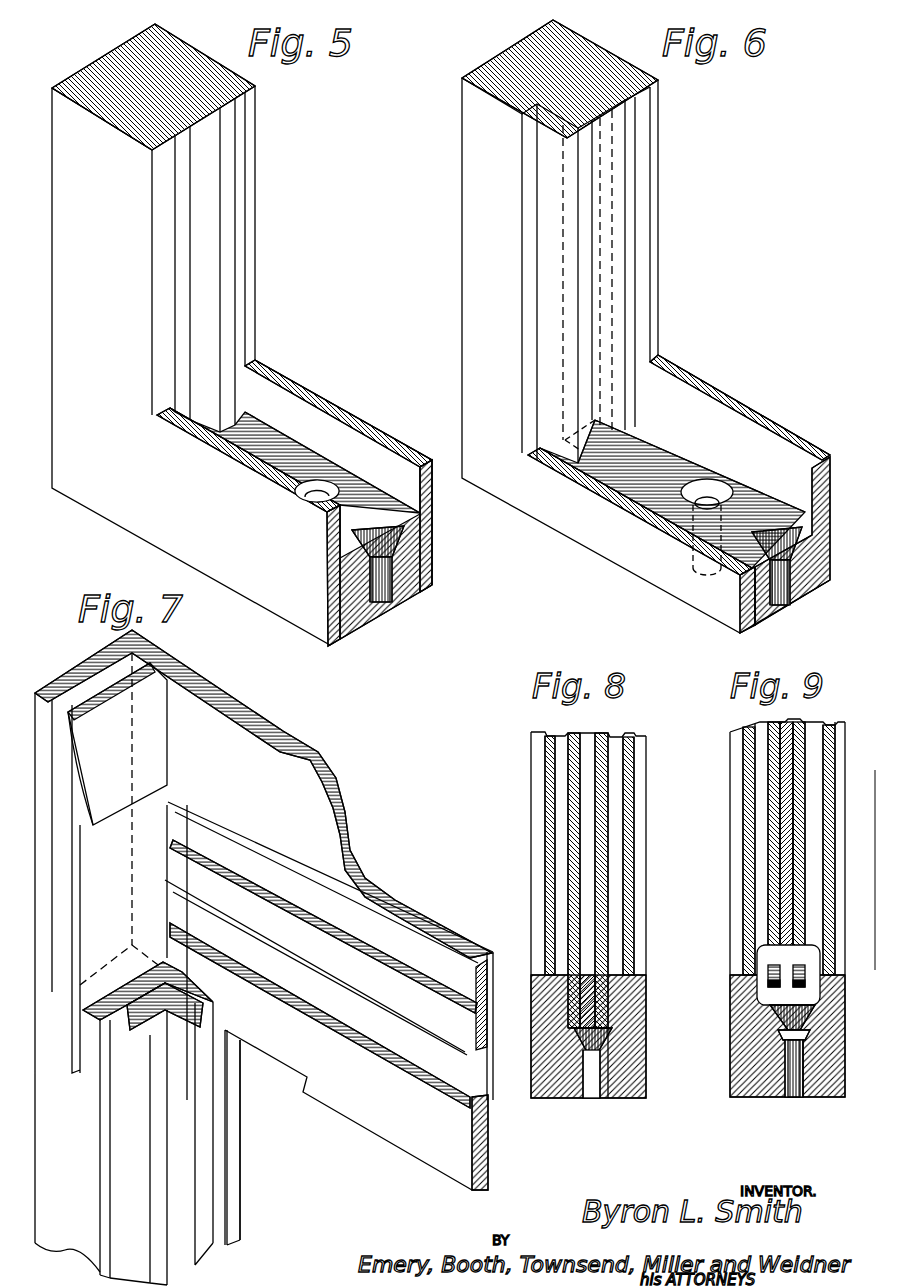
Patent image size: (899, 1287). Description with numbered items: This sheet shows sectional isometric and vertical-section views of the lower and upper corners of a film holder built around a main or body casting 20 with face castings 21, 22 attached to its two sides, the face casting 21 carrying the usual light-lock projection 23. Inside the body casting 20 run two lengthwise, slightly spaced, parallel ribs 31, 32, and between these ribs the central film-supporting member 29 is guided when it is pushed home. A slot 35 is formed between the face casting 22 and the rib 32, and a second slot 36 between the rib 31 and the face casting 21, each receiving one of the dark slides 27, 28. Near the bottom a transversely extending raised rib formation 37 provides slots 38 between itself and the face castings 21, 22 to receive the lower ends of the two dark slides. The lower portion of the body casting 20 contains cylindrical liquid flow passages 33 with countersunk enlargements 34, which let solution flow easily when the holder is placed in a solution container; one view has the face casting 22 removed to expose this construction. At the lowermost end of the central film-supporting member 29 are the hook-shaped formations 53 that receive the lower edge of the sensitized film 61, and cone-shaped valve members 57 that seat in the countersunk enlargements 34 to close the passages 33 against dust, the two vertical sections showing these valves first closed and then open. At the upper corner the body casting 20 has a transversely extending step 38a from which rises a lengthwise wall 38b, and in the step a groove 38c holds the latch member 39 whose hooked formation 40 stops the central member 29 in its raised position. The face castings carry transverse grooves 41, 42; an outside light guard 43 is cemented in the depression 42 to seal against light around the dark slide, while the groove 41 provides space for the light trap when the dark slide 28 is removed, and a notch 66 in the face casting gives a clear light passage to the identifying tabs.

In FIG. 5, the main or body casting 20 is at (106, 72).
In FIG. 6, the main or body casting 20 is at (508, 62).
In FIG. 8, the main or body casting 20 is at (620, 1092).
In FIG. 9, the main or body casting 20 is at (815, 1092).
In FIG. 5, the face casting 21 is at (255, 312).
In FIG. 6, the face casting 21 is at (660, 297).
In FIG. 8, the face casting 21 is at (647, 1080).
In FIG. 9, the face casting 21 is at (840, 810).
In FIG. 5, the face casting 22 is at (70, 156).
In FIG. 7, the face casting 22 is at (67, 982).
In FIG. 8, the face casting 22 is at (538, 1055).
In FIG. 9, the face casting 22 is at (743, 790).
In FIG. 7, the light-lock projection 23 is at (493, 1133).
In FIG. 8, the dark slide 27 is at (625, 832).
In FIG. 9, the dark slide 27 is at (820, 878).
In FIG. 8, the dark slide 28 is at (545, 815).
In FIG. 9, the dark slide 28 is at (745, 868).
In FIG. 9, the central film-supporting member 29 is at (785, 930).
In FIG. 5, the rib 31 is at (230, 252).
In FIG. 6, the rib 31 is at (628, 240).
In FIG. 7, the rib 31 is at (190, 1205).
In FIG. 5, the rib 32 is at (185, 330).
In FIG. 6, the rib 32 is at (585, 275).
In FIG. 7, the rib 32 is at (163, 1190).
In FIG. 5, the liquid flow passage 33 is at (380, 606).
In FIG. 6, the liquid flow passage 33 is at (782, 605).
In FIG. 8, the liquid flow passage 33 is at (590, 1100).
In FIG. 9, the liquid flow passage 33 is at (790, 1100).
In FIG. 5, the countersunk enlargement 34 is at (318, 488).
In FIG. 6, the countersunk enlargement 34 is at (713, 487).
In FIG. 9, the countersunk enlargement 34 is at (785, 1035).
In FIG. 5, the slot 35 is at (170, 285).
In FIG. 5, the slot 36 is at (240, 218).
In FIG. 6, the slot 36 is at (640, 185).
In FIG. 7, the slot 36 is at (225, 1165).
In FIG. 5, the raised rib formation 37 is at (272, 457).
In FIG. 6, the raised rib formation 37 is at (660, 460).
In FIG. 5, the slot 38 is at (340, 565).
In FIG. 6, the slot 38 is at (625, 492).
In FIG. 7, the step 38a is at (128, 1005).
In FIG. 7, the wall 38b is at (98, 686).
In FIG. 7, the groove or slot 38c is at (70, 1058).
In FIG. 7, the latch member 39 is at (145, 812).
In FIG. 7, the hooked or dog-like formation 40 is at (112, 802).
In FIG. 7, the groove or depression 41 is at (450, 1072).
In FIG. 7, the groove or depression 42 is at (478, 975).
In FIG. 7, the outside light guard or trap 43 is at (395, 1000).
In FIG. 8, the hook-shaped formation 53 is at (560, 970).
In FIG. 9, the hook-shaped formation 53 is at (760, 970).
In FIG. 8, the cone-shaped or tapered valve member 57 is at (615, 1043).
In FIG. 9, the cone-shaped or tapered valve member 57 is at (785, 1013).
In FIG. 8, the sheet or film 61 is at (568, 856).
In FIG. 9, the sheet or film 61 is at (770, 900).
In FIG. 7, the notch 66 is at (278, 1070).